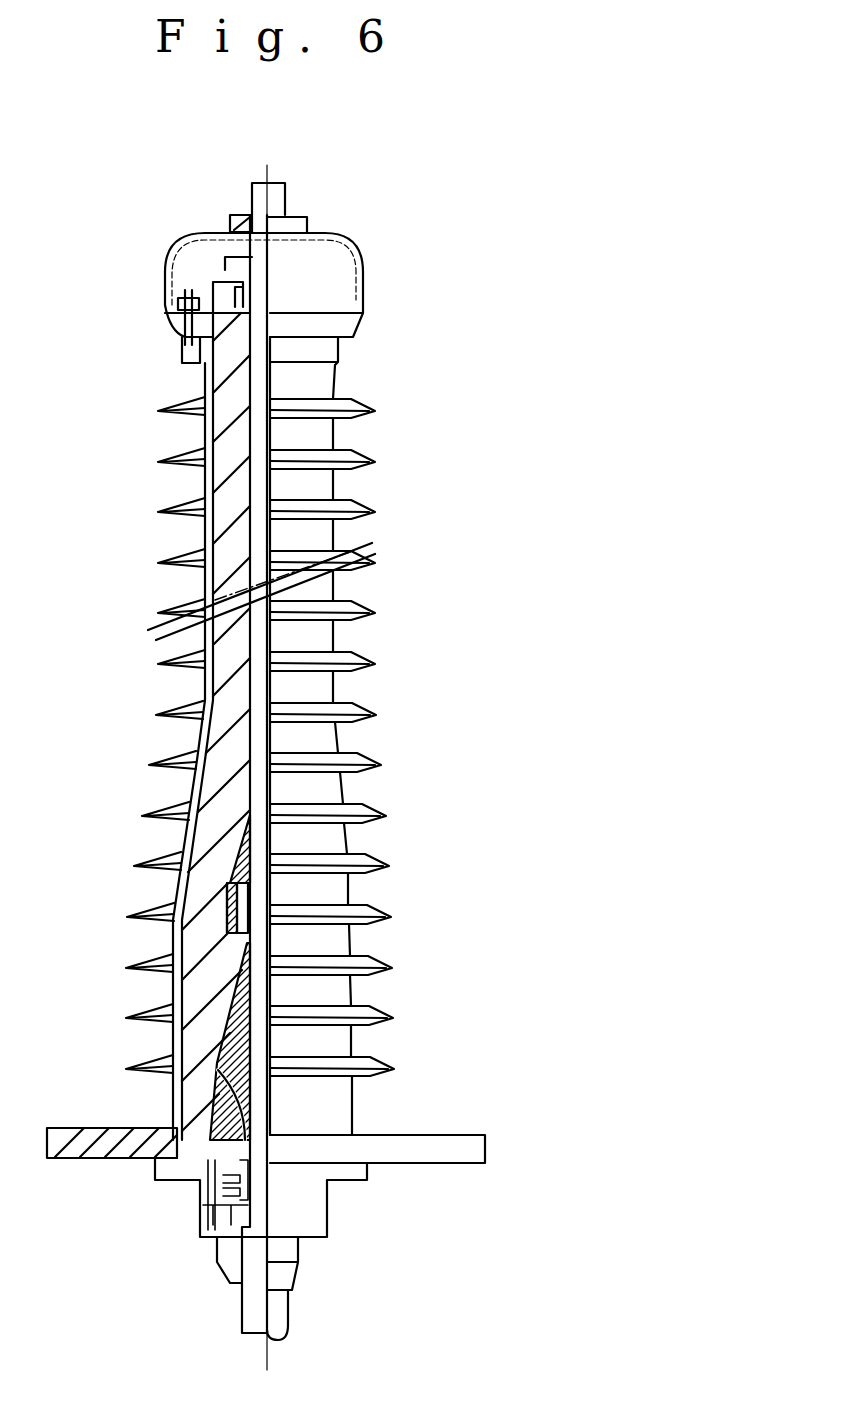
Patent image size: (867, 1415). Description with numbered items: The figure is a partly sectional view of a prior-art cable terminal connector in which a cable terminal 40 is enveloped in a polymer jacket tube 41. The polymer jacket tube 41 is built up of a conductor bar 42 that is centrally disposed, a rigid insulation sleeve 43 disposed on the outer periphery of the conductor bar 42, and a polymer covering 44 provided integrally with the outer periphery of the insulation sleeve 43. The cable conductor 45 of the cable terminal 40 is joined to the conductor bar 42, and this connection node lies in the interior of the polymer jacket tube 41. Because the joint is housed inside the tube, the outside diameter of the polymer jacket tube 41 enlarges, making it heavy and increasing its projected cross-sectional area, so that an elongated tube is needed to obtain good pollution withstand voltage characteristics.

The cable terminal 40 is at (187, 1206).
The polymer jacket tube 41 is at (401, 734).
The conductor bar 42 is at (263, 297).
The rigid insulation sleeve 43 is at (238, 552).
The polymer covering 44 is at (163, 810).
The cable conductor 45 is at (232, 873).